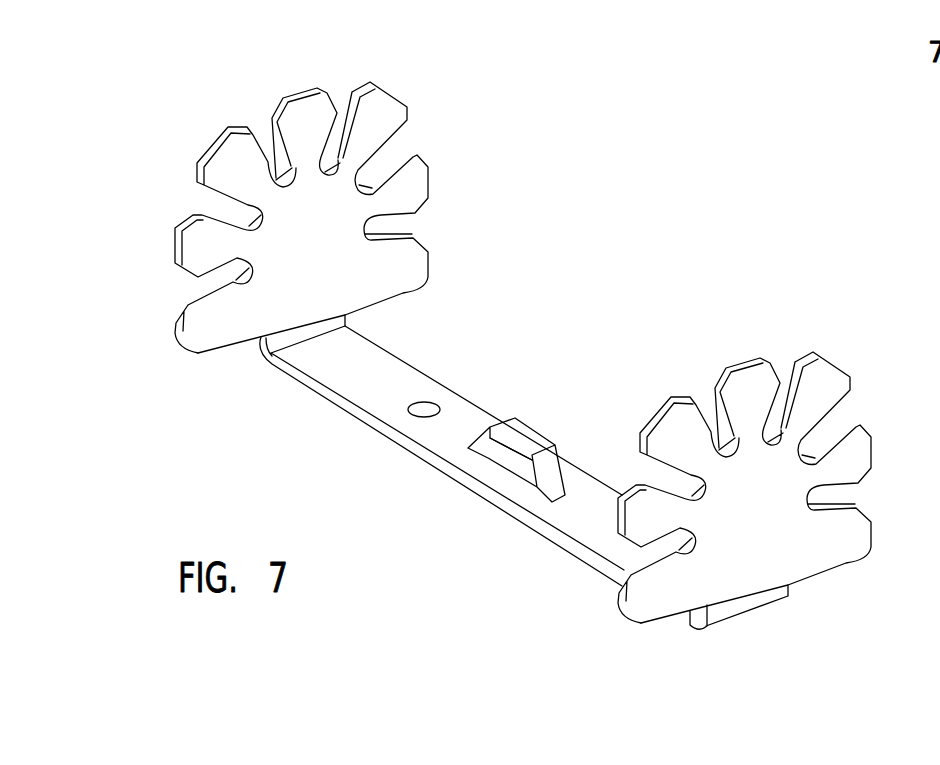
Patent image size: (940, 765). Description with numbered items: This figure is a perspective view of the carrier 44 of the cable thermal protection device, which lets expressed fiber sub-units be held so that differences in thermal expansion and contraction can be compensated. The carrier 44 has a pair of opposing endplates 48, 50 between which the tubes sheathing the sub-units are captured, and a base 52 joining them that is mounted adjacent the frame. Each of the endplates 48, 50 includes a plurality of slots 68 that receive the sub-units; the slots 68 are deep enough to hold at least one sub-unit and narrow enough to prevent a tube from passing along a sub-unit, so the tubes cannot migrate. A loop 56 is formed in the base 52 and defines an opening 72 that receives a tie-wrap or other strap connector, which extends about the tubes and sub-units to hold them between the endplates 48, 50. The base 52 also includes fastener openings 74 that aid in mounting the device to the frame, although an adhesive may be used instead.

The carrier 44 is at (337, 442).
The endplate 48 is at (316, 280).
The endplate 50 is at (758, 536).
The base 52 is at (370, 383).
The loop 56 is at (527, 432).
The slots 68 is at (262, 128).
The opening 72 is at (508, 468).
The fastener openings 74 is at (428, 411).